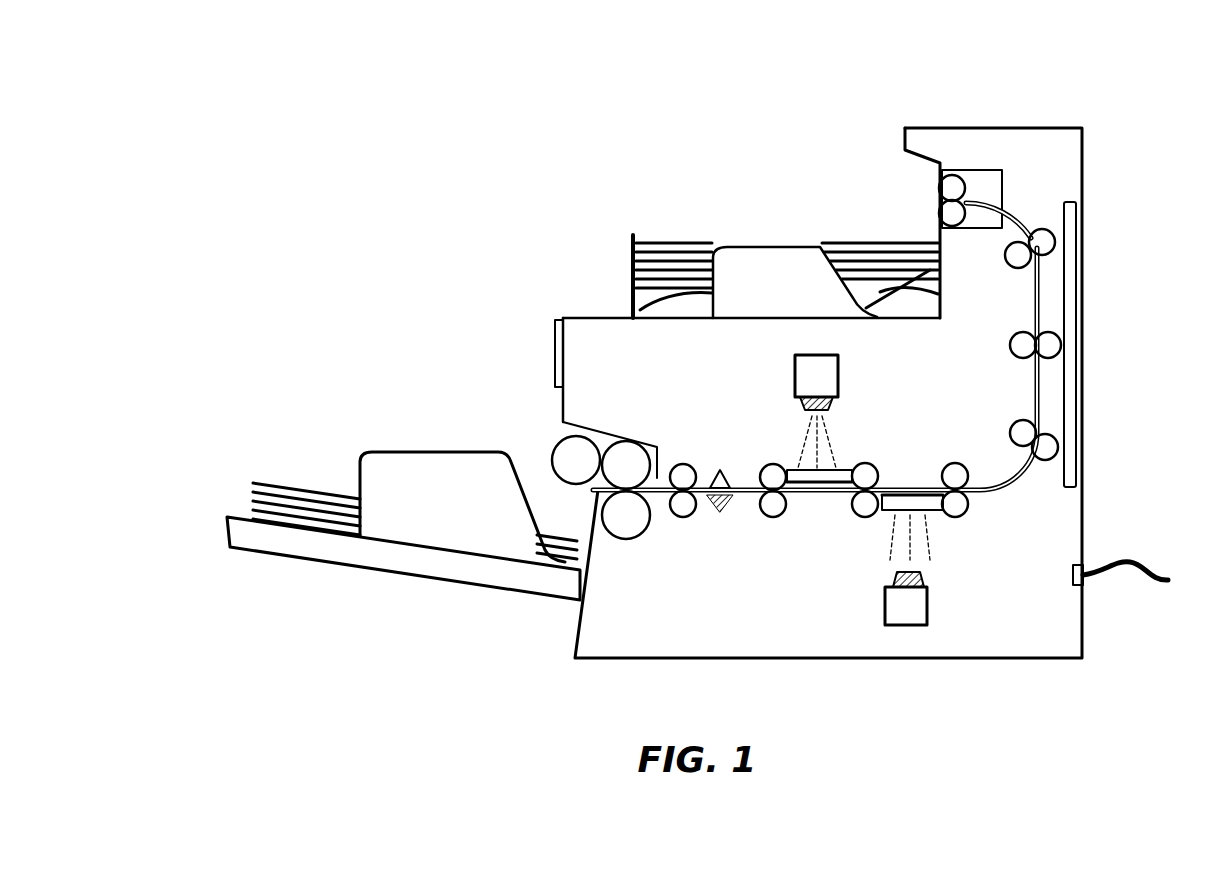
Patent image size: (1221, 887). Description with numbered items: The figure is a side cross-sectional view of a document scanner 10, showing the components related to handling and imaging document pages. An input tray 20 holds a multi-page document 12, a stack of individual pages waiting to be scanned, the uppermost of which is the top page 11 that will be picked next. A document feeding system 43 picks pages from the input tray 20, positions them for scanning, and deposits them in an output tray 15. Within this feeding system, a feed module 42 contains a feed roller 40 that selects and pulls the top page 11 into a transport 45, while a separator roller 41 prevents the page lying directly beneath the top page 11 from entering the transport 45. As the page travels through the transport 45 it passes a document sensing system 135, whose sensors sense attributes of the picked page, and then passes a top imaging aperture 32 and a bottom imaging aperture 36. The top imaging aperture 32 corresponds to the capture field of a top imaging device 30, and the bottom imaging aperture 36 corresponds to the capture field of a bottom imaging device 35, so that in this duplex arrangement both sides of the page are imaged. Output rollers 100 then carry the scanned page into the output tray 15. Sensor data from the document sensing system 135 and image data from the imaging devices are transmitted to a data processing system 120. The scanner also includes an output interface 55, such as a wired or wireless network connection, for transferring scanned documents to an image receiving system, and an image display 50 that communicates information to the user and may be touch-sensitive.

The document scanner 10 is at (1122, 82).
The output rollers 100 is at (982, 170).
The output tray 15 is at (750, 219).
The image display 50 is at (555, 352).
The top imaging device 30 is at (792, 387).
The top imaging aperture 32 is at (840, 465).
The bottom imaging aperture 36 is at (942, 515).
The bottom imaging device 35 is at (930, 593).
The transport 45 is at (760, 498).
The document sensing system 135 is at (720, 468).
The feed module 42 is at (556, 423).
The feed roller 40 is at (593, 440).
The separator roller 41 is at (630, 538).
The document feeding system 43 is at (704, 574).
The input tray 20 is at (494, 590).
The multi-page document 12 is at (243, 495).
The top page 11 is at (297, 480).
The data processing system 120 is at (1078, 490).
The output interface 55 is at (1098, 589).